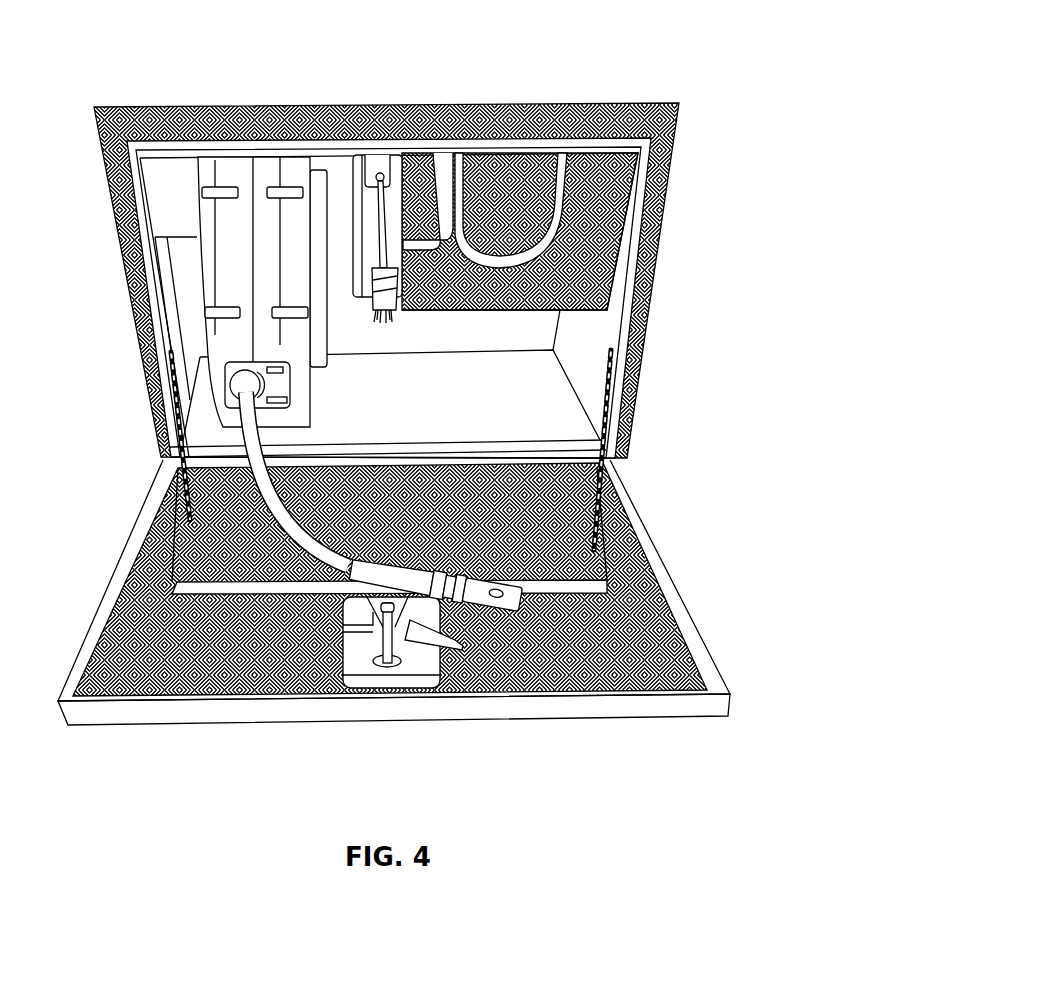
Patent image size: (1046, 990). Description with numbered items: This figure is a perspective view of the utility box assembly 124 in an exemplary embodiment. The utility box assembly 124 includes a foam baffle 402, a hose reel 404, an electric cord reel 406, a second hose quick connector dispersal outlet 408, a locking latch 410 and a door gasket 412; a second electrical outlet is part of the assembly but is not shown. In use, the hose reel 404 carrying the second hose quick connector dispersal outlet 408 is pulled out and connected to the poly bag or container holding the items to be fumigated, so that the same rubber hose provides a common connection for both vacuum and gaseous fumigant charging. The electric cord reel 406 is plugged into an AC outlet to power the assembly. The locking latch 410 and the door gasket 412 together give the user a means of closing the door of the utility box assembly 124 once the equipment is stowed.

The utility box assembly 124 is at (682, 107).
The foam baffle 402 is at (180, 302).
The hose reel 404 is at (222, 255).
The electric cord reel 406 is at (383, 170).
The second hose quick connector dispersal outlet 408 is at (527, 588).
The locking latch 410 is at (422, 662).
The door gasket 412 is at (573, 462).